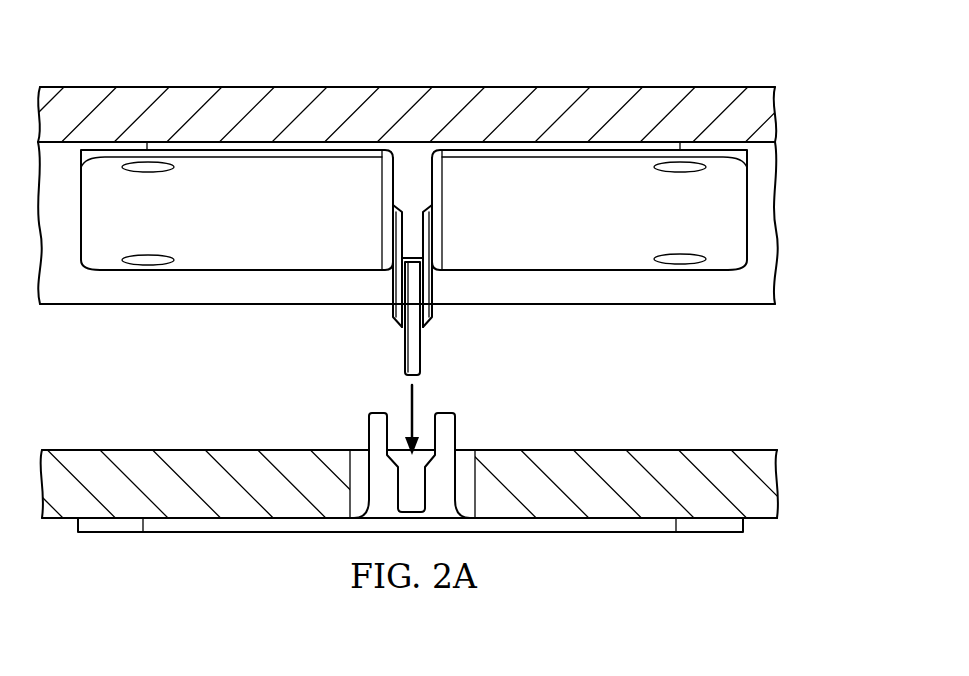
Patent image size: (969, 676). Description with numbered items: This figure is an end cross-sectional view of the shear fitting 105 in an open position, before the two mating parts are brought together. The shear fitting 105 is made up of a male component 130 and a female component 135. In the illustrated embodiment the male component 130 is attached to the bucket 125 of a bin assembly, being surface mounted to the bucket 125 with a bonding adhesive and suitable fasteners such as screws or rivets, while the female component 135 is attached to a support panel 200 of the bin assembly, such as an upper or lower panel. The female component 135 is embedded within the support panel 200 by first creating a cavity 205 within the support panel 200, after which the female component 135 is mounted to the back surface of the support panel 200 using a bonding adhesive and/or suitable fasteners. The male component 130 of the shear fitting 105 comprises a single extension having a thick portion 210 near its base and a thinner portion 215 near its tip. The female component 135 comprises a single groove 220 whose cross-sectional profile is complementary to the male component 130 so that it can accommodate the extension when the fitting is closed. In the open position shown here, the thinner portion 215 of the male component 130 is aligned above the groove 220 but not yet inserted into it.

The shear fitting 105 is at (579, 61).
The bucket 125 is at (768, 215).
The male component 130 is at (563, 276).
The thick portion 210 is at (397, 182).
The thinner portion 215 is at (413, 241).
The groove 220 is at (396, 416).
The cavity 205 is at (466, 462).
The support panel 200 is at (777, 476).
The female component 135 is at (574, 539).